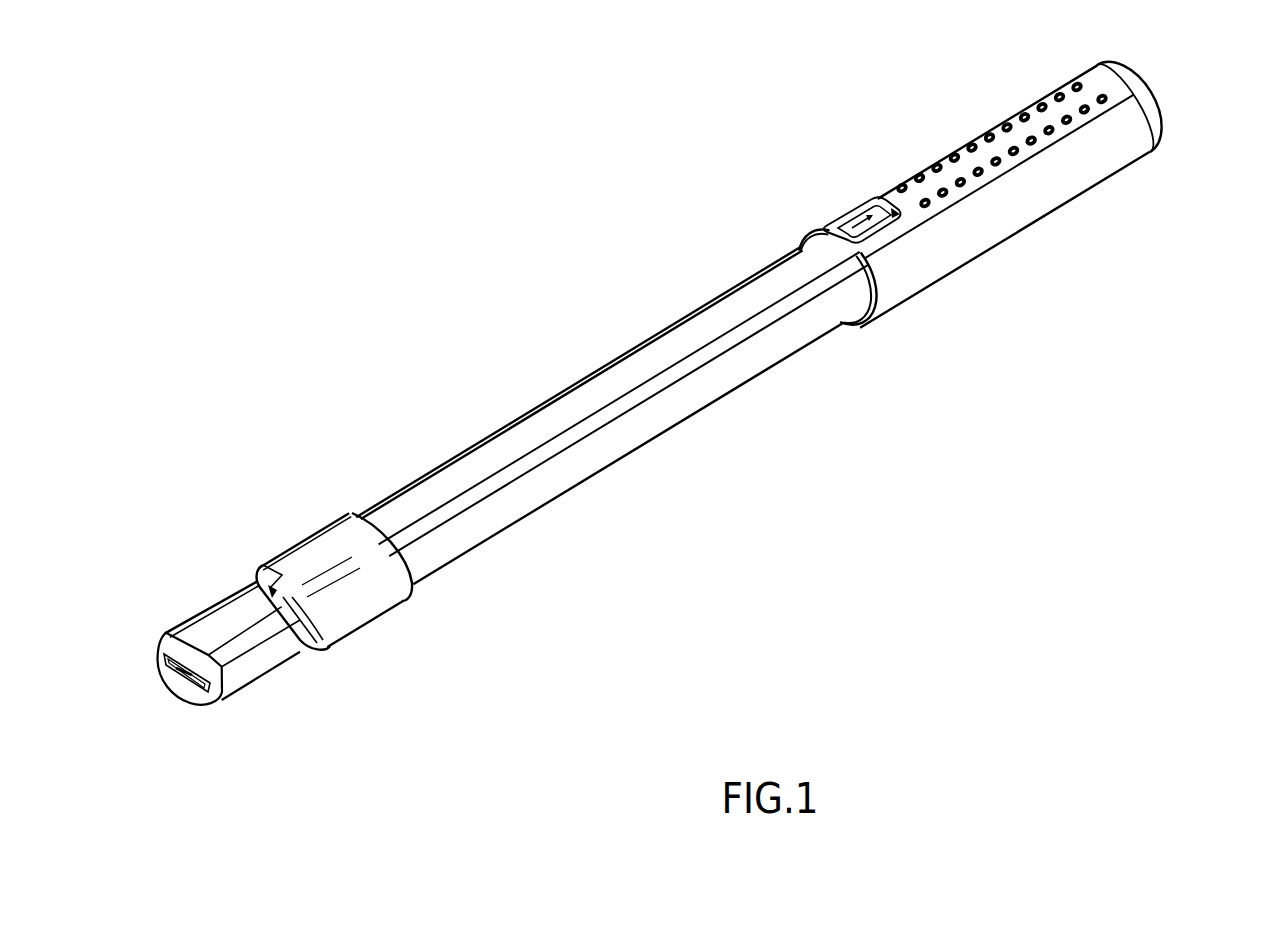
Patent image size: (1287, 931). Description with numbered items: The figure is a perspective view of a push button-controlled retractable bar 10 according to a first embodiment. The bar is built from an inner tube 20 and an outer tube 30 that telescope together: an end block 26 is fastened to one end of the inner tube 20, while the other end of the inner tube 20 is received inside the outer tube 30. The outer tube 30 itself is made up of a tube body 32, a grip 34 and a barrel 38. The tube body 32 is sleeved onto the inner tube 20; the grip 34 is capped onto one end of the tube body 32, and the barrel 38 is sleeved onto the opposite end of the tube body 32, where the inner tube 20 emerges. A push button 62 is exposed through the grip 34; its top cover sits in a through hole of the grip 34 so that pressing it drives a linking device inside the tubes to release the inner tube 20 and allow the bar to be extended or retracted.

The push button-controlled retractable bar 10 is at (391, 247).
The inner tube 20 is at (207, 723).
The end block 26 is at (223, 617).
The outer tube 30 is at (1184, 136).
The tube body 32 is at (602, 445).
The grip 34 is at (1013, 213).
The barrel 38 is at (363, 607).
The push button 62 is at (838, 200).